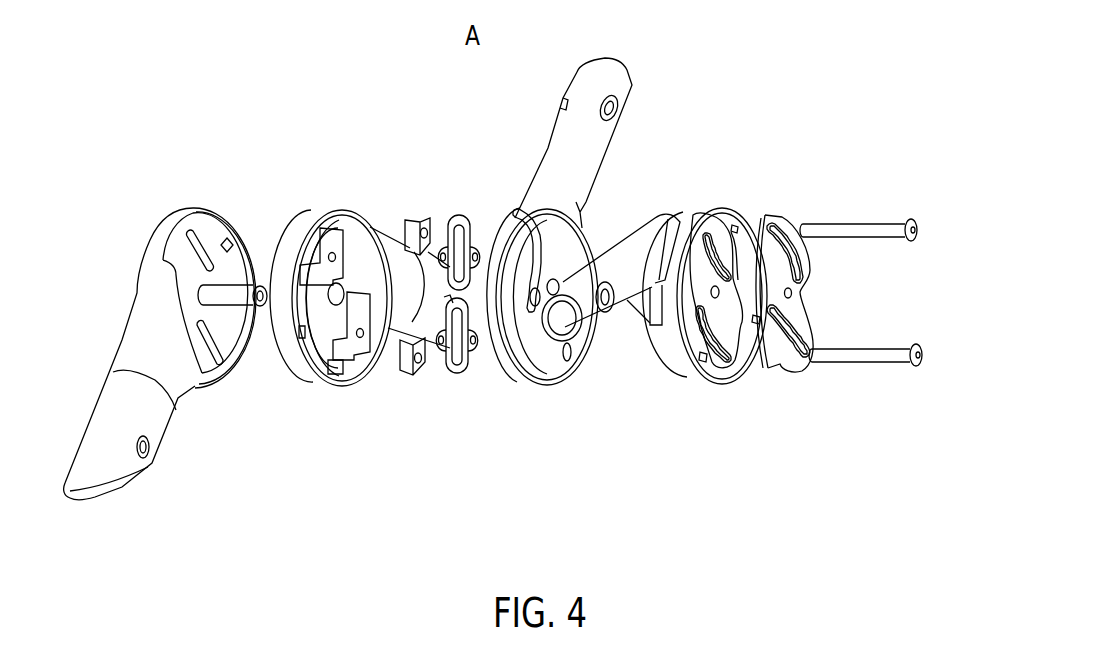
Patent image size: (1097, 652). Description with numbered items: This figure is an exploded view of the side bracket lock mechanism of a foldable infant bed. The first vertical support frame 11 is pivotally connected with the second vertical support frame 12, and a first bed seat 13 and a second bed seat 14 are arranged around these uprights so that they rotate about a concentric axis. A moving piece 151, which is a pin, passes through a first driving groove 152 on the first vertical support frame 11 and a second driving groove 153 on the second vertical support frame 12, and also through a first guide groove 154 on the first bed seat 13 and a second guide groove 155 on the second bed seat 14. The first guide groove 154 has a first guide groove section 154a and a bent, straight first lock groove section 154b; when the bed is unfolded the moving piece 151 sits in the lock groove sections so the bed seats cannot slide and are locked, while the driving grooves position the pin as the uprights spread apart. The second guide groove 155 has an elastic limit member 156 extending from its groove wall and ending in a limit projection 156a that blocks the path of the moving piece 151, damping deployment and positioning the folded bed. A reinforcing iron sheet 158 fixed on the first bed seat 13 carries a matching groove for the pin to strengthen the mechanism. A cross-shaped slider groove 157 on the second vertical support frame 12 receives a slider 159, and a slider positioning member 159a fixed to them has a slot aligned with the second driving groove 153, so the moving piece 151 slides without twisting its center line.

The first vertical support frame 11 is at (148, 421).
The second vertical support frame 12 is at (425, 322).
The first bed seat 13 is at (630, 268).
The second bed seat 14 is at (560, 165).
The moving piece 151 is at (867, 224).
The first driving groove 152 is at (193, 208).
The second driving groove 153 is at (350, 380).
The first guide groove 154 is at (722, 352).
The first guide groove section 154a is at (722, 232).
The first lock groove section 154b is at (703, 238).
The second guide groove 155 is at (537, 233).
The elastic limit member 156 is at (522, 324).
The limit projection 156a is at (534, 306).
The slider groove 157 is at (333, 238).
The reinforcing iron sheet 158 is at (801, 209).
The slider 159 is at (410, 216).
The slider positioning member 159a is at (450, 217).